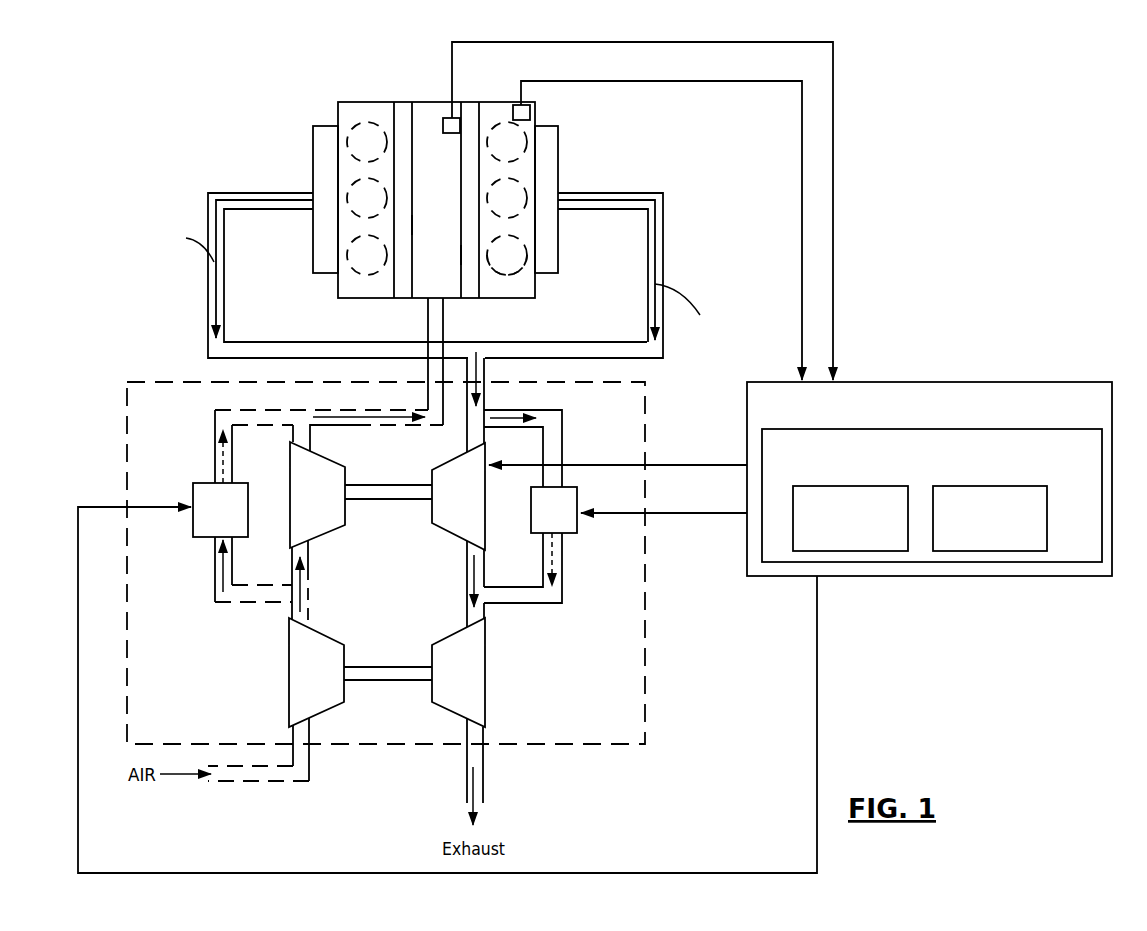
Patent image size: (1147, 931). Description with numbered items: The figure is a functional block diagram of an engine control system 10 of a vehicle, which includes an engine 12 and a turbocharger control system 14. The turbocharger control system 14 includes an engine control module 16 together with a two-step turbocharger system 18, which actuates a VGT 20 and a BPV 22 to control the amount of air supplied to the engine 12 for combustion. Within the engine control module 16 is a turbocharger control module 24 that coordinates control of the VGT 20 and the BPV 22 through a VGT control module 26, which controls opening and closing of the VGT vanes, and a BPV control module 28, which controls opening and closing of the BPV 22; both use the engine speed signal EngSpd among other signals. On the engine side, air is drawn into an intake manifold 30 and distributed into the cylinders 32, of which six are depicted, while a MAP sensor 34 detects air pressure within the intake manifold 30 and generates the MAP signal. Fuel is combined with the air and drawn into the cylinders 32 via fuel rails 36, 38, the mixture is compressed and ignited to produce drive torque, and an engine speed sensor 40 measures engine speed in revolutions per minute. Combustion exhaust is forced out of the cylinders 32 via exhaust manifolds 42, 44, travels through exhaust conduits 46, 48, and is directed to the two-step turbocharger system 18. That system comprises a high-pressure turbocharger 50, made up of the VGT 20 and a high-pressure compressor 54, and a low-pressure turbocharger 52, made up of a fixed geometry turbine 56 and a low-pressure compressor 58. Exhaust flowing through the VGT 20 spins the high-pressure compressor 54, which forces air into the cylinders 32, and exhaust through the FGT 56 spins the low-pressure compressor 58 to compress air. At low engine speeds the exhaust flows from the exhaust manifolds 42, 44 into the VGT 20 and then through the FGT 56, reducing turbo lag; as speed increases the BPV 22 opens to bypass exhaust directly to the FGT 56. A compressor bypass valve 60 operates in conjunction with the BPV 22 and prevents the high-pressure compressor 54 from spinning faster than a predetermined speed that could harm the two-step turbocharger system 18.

The engine control system 10 is at (173, 80).
The engine 12 is at (366, 102).
The turbocharger control system 14 is at (862, 629).
The engine control module 16 is at (1012, 382).
The two-step turbocharger system 18 is at (645, 633).
The VGT 20 is at (432, 468).
The BPV 22 is at (577, 527).
The turbocharger control module 24 is at (1014, 429).
The VGT control module 26 is at (887, 486).
The BPV control module 28 is at (1024, 486).
The intake manifold 30 is at (428, 102).
The cylinders 32 is at (520, 270).
The intake manifold absolute pressure (MAP) sensor 34 is at (452, 133).
The fuel rail 36 is at (412, 225).
The fuel rail 38 is at (461, 255).
The engine speed sensor 40 is at (530, 112).
The exhaust manifold 42 is at (313, 232).
The exhaust manifold 44 is at (558, 232).
The exhaust conduit 46 is at (208, 330).
The exhaust conduit 48 is at (663, 245).
The high-pressure turbocharger 50 is at (369, 522).
The low-pressure turbocharger 52 is at (366, 635).
The high-pressure compressor 54 is at (290, 490).
The fixed geometry turbine (FGT) 56 is at (486, 684).
The low-pressure compressor 58 is at (289, 681).
The compressor bypass valve (CBPV) 60 is at (205, 483).